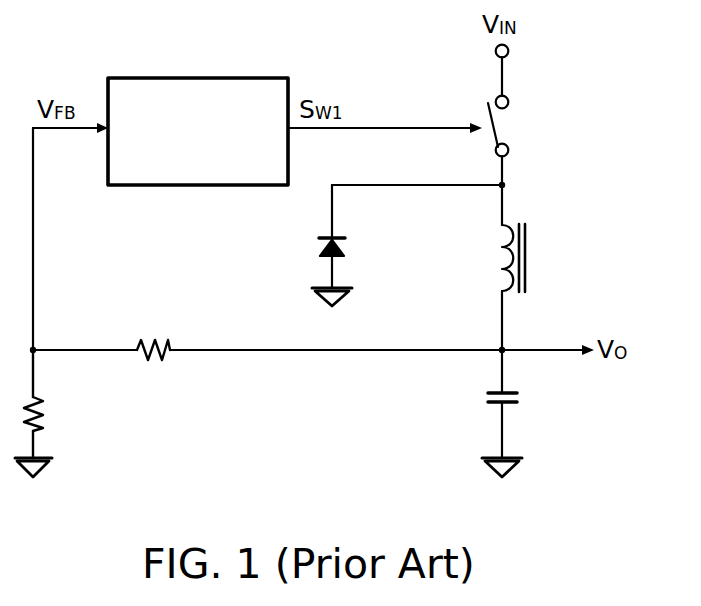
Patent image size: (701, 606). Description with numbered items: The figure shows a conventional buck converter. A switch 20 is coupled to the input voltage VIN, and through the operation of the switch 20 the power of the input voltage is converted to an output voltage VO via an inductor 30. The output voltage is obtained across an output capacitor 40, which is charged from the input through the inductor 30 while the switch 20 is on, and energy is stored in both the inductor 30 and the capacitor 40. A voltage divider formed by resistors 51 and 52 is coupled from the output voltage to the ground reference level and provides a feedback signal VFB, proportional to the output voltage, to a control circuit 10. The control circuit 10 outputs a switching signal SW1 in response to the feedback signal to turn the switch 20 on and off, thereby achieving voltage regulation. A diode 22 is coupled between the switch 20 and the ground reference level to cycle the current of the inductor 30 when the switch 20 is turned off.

The control circuit 10 is at (152, 73).
The switch 20 is at (513, 125).
The diode 22 is at (352, 248).
The inductor 30 is at (530, 260).
The output capacitor 40 is at (522, 400).
The resistor 51 is at (150, 330).
The resistor 52 is at (48, 414).